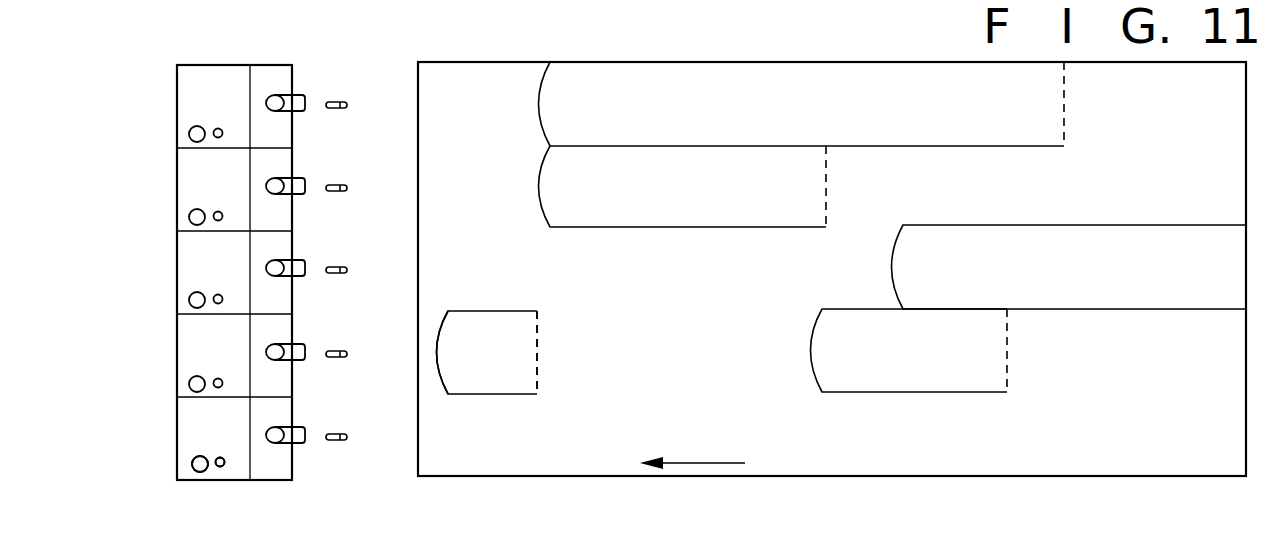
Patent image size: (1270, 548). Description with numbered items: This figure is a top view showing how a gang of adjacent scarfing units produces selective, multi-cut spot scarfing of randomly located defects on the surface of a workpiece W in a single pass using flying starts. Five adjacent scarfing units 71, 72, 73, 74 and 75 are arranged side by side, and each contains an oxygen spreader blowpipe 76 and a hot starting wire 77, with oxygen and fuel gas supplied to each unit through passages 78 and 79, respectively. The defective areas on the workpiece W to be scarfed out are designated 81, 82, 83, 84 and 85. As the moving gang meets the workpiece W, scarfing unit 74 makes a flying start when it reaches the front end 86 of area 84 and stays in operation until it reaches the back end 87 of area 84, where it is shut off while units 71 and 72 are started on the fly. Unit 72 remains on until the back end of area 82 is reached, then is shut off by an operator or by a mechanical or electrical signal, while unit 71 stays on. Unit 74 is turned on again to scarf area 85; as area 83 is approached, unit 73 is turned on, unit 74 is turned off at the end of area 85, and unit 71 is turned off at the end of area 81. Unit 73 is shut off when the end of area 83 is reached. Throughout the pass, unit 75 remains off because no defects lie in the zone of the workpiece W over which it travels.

The scarfing unit 71 is at (176, 100).
The scarfing unit 72 is at (177, 183).
The scarfing unit 73 is at (177, 262).
The scarfing unit 74 is at (177, 350).
The scarfing unit 75 is at (177, 437).
The oxygen spreader blowpipe 76 is at (295, 97).
The hot starting wire 77 is at (338, 102).
The oxygen passage 78 is at (200, 472).
The fuel gas passage 79 is at (222, 468).
The defective area 81 is at (782, 70).
The defective area 82 is at (725, 213).
The defective area 83 is at (1158, 298).
The defective area 84 is at (503, 378).
The defective area 85 is at (923, 380).
The front end 86 is at (434, 358).
The back end 87 is at (540, 362).
The workpiece W is at (790, 477).